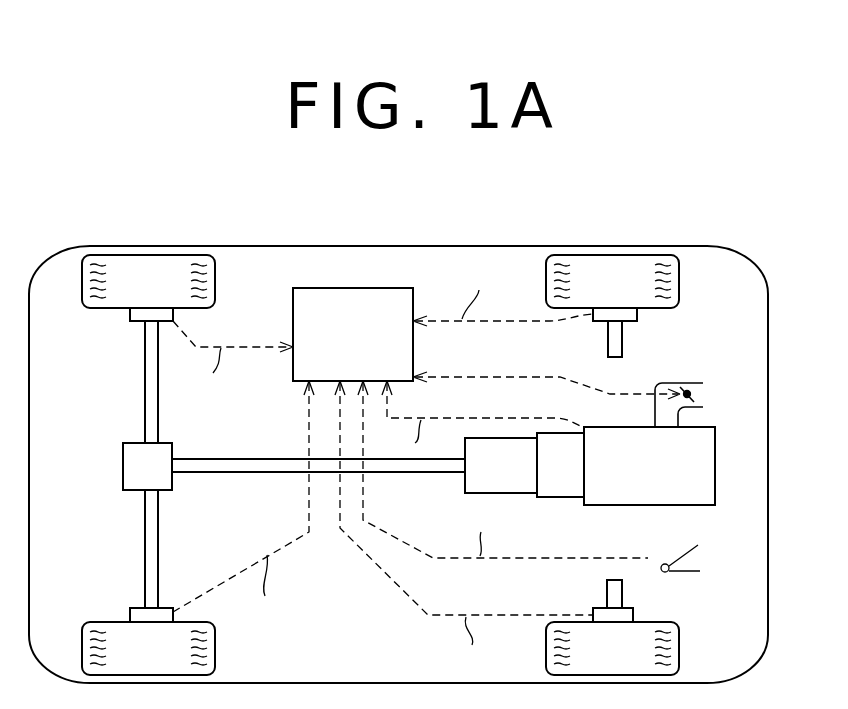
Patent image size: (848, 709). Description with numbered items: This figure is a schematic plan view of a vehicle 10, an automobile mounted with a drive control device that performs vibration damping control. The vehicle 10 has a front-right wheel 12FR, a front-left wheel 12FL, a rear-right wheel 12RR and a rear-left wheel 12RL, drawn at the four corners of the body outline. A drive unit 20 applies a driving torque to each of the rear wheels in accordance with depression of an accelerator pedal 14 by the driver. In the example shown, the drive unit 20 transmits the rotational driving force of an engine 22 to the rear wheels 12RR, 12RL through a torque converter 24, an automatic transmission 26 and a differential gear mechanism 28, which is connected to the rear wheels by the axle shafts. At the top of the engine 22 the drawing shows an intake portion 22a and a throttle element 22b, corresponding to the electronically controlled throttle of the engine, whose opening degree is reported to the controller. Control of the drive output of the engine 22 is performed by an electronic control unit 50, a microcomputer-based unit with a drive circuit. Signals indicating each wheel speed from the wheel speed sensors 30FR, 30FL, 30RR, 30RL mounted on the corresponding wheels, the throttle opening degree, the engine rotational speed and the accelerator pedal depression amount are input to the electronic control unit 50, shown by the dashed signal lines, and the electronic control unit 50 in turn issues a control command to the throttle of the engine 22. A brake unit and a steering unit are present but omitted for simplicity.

The vehicle 10 is at (777, 490).
The rear-left wheel 12RL is at (148, 281).
The rear-right wheel 12RR is at (148, 648).
The front-left wheel 12FL is at (612, 281).
The front-right wheel 12FR is at (612, 648).
The wheel speed sensor 30RL is at (130, 313).
The wheel speed sensor 30RR is at (130, 615).
The wheel speed sensor 30FL is at (637, 317).
The wheel speed sensor 30FR is at (633, 615).
The electronic control unit 50 is at (336, 354).
The differential gear mechanism 28 is at (130, 480).
The automatic transmission 26 is at (484, 478).
The torque converter 24 is at (543, 478).
The engine 22 is at (631, 478).
The drive unit 20 is at (614, 455).
The intake passage 22a is at (690, 383).
The throttle valve 22b is at (698, 393).
The accelerator pedal 14 is at (705, 558).